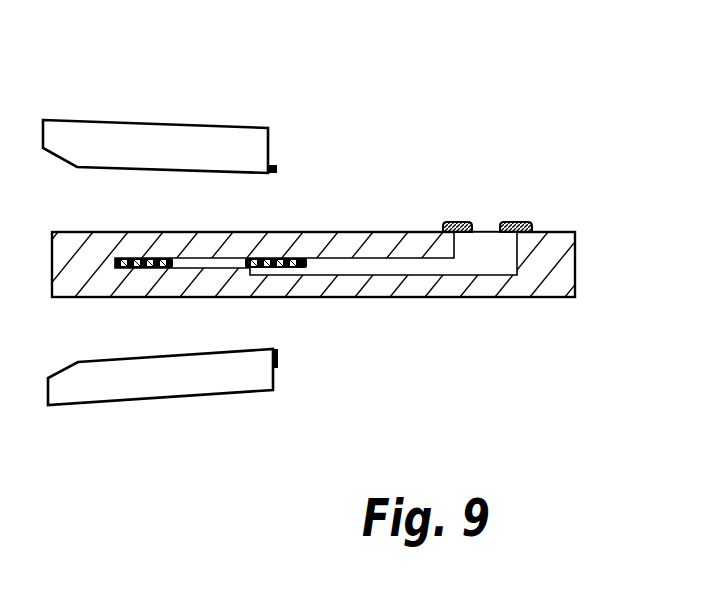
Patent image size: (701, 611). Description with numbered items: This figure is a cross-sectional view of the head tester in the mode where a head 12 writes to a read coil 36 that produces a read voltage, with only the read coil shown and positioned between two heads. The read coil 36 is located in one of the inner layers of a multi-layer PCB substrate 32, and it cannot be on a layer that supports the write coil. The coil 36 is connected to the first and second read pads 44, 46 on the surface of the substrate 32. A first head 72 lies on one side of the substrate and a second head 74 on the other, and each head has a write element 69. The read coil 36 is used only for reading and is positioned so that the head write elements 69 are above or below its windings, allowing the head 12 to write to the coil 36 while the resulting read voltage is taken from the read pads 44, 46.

The head 12 is at (178, 263).
The multi-layer PCB substrate 32 is at (563, 265).
The read coil 36 is at (218, 297).
The first read pad 44 is at (478, 70).
The second read pad 46 is at (518, 18).
The write element 69 is at (278, 163).
The first head 72 is at (247, 138).
The second head 74 is at (240, 383).